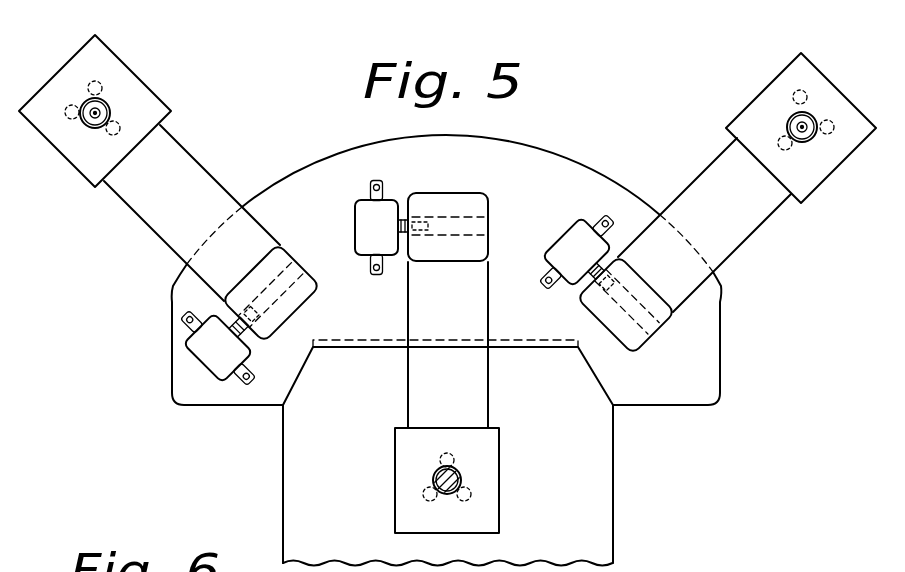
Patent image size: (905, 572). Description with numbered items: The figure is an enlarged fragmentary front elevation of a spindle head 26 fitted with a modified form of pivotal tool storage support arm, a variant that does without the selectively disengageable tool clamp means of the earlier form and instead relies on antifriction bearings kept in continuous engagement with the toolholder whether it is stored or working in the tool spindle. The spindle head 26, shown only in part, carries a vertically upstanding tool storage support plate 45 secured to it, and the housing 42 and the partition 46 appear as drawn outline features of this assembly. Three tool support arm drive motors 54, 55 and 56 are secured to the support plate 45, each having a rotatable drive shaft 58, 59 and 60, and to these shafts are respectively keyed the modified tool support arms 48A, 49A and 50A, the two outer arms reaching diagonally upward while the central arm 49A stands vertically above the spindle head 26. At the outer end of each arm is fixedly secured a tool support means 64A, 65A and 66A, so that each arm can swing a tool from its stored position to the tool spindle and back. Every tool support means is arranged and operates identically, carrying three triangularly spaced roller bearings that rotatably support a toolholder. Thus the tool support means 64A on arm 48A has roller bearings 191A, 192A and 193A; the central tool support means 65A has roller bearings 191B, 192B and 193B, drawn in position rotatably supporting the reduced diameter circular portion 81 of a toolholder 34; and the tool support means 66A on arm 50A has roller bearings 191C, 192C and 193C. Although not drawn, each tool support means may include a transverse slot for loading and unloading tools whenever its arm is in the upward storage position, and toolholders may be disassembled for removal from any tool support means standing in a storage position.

The housing 42 is at (530, 138).
The tool storage support plate 45 is at (470, 163).
The spindle head 26 is at (585, 463).
The partition wall 46 is at (540, 343).
The tool support arm 49A is at (424, 313).
The tool support means 65A is at (388, 472).
The reduced diameter circular portion 81 is at (436, 473).
The toolholder 34 is at (445, 499).
The roller bearing 191B is at (443, 455).
The roller bearing 192B is at (425, 499).
The roller bearing 193B is at (470, 498).
The tool support arm 48A is at (194, 166).
The drive shaft 58 is at (300, 262).
The drive motor 54 is at (205, 352).
The tool support means 64A is at (146, 96).
The roller bearing 193A is at (102, 84).
The roller bearing 192A is at (69, 122).
The roller bearing 191A is at (111, 137).
The tool support arm 50A is at (730, 245).
The drive shaft 60 is at (650, 337).
The drive motor 56 is at (576, 233).
The tool support means 66A is at (752, 122).
The roller bearing 192C is at (790, 93).
The roller bearing 193C is at (833, 136).
The roller bearing 191C is at (791, 150).
The drive motor 55 is at (362, 210).
The drive shaft 59 is at (497, 217).